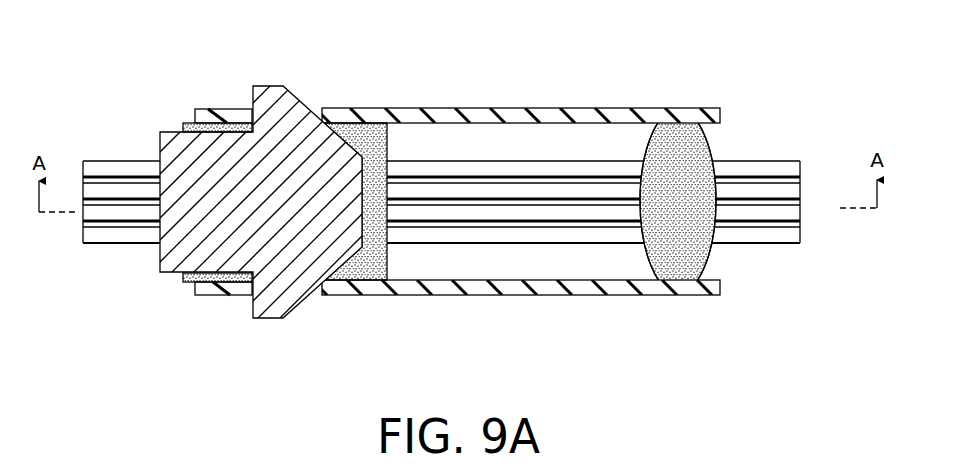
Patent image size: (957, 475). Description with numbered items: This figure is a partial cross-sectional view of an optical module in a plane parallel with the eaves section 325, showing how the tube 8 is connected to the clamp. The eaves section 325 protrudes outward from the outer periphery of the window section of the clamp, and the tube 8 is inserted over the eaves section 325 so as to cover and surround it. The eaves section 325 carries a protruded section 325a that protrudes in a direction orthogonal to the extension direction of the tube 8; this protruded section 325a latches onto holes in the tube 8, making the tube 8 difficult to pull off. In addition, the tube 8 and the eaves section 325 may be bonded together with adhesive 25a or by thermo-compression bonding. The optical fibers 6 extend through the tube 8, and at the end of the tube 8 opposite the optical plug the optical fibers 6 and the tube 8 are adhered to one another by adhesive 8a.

The optical fibers 6 is at (803, 147).
The tube 8 is at (553, 110).
The adhesive 8a is at (720, 150).
The adhesive 25a is at (360, 108).
The eaves section 325 is at (204, 140).
The protruded section 325a is at (270, 97).